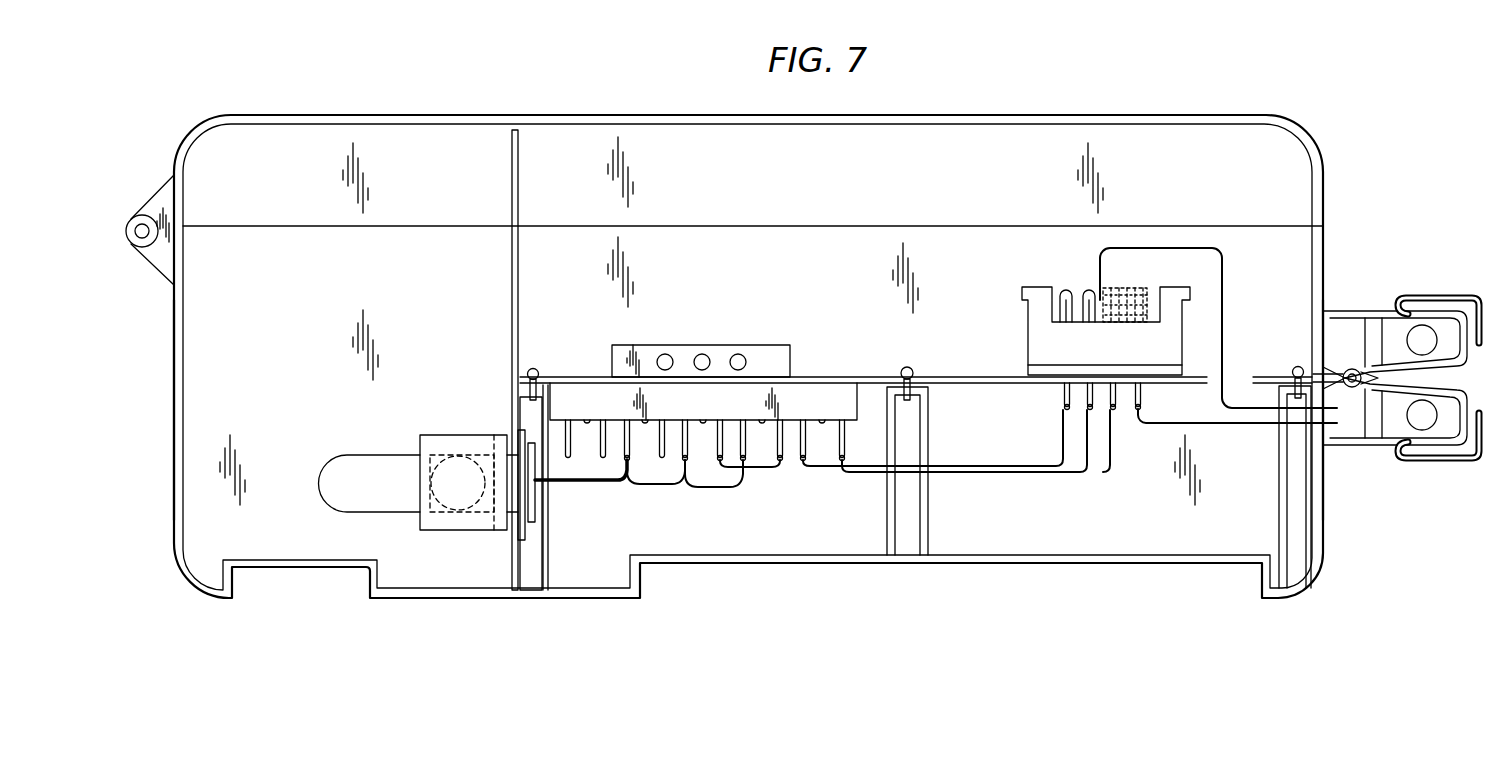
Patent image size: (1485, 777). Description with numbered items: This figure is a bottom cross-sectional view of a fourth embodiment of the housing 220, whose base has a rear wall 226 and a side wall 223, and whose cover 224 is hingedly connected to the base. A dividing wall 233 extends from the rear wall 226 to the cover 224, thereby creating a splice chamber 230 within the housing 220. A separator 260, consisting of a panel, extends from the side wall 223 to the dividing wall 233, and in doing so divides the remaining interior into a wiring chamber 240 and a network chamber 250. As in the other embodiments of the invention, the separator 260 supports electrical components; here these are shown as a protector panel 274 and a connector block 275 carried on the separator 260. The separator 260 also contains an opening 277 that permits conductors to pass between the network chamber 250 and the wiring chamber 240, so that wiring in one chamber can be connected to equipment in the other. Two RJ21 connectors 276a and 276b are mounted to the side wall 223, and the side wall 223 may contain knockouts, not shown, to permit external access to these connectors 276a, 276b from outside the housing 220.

The housing 220 is at (880, 110).
The side wall 223 is at (1323, 266).
The cover 224 is at (722, 117).
The rear wall 226 is at (407, 600).
The splice chamber 230 is at (185, 338).
The dividing wall 233 is at (512, 205).
The wiring chamber 240 is at (1095, 532).
The network chamber 250 is at (1062, 137).
The separator 260 is at (981, 377).
The protector panel 274 is at (716, 345).
The connector block 275 is at (1030, 287).
The RJ21 connector 276a is at (1427, 298).
The RJ21 connector 276b is at (1430, 437).
The opening 277 is at (1233, 370).